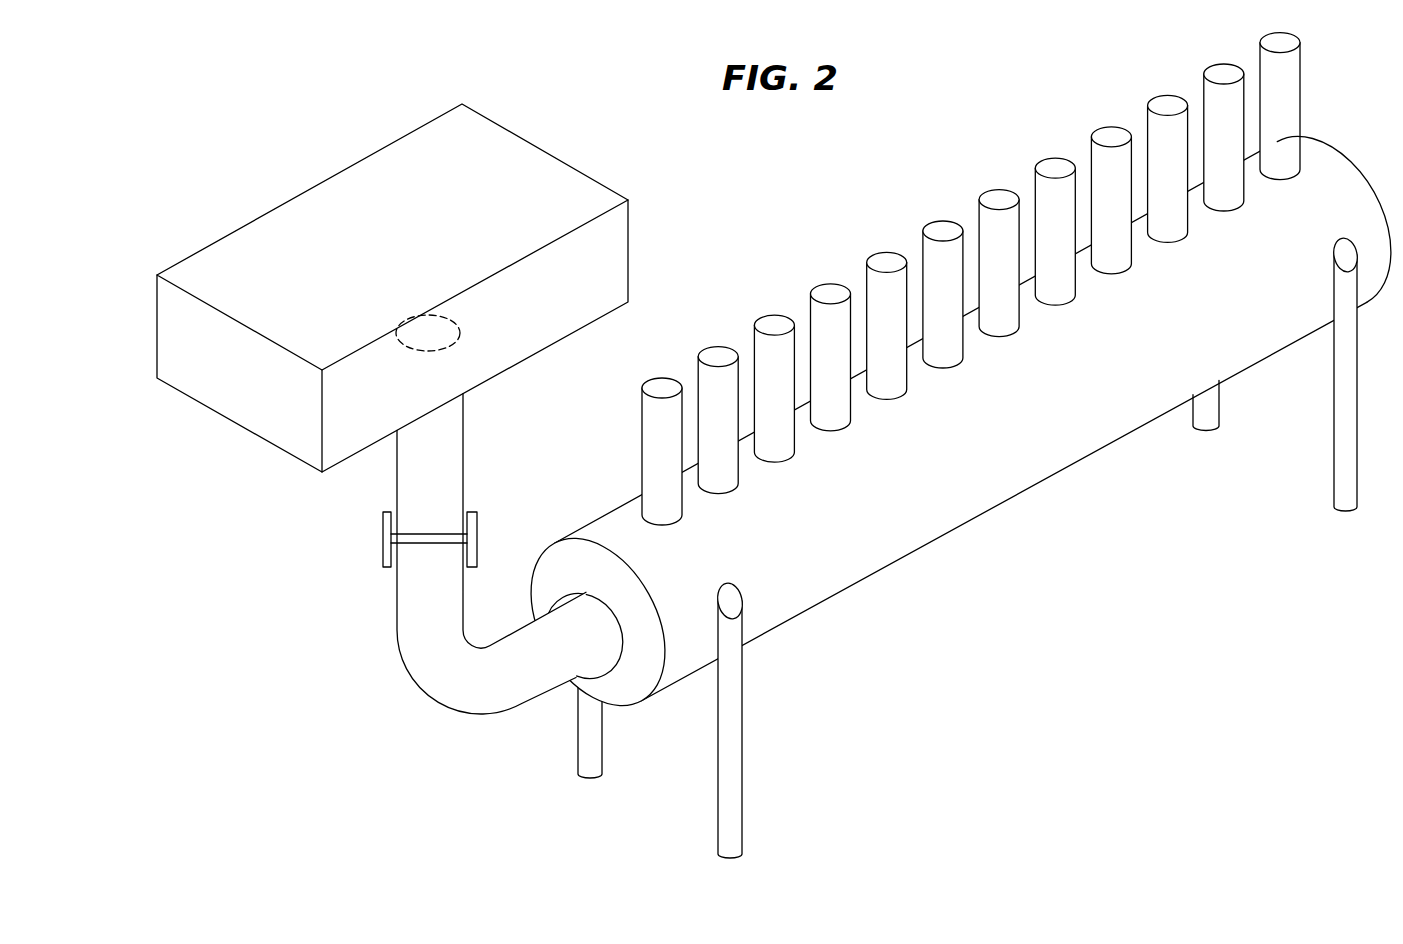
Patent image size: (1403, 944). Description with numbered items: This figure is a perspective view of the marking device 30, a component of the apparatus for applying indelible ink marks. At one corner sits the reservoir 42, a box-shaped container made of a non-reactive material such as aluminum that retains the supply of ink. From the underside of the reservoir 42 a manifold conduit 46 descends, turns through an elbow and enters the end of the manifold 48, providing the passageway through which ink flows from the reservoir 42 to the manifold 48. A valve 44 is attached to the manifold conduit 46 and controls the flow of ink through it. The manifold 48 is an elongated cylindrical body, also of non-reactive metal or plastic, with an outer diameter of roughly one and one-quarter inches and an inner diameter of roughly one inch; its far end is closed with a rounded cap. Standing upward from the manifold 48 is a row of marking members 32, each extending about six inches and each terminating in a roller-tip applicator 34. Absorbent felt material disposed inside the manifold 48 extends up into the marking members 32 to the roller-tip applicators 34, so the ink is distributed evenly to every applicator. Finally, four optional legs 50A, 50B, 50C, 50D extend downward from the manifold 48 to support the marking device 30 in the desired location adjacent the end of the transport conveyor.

The marking device 30 is at (873, 200).
The marking members 32 is at (807, 300).
The roller-tip applicator 34 is at (758, 318).
The reservoir 42 is at (587, 175).
The valve 44 is at (382, 555).
The manifold conduit 46 is at (418, 686).
The manifold 48 is at (1350, 157).
The leg 50A is at (577, 718).
The leg 50B is at (744, 750).
The leg 50C is at (1333, 430).
The leg 50D is at (1220, 400).